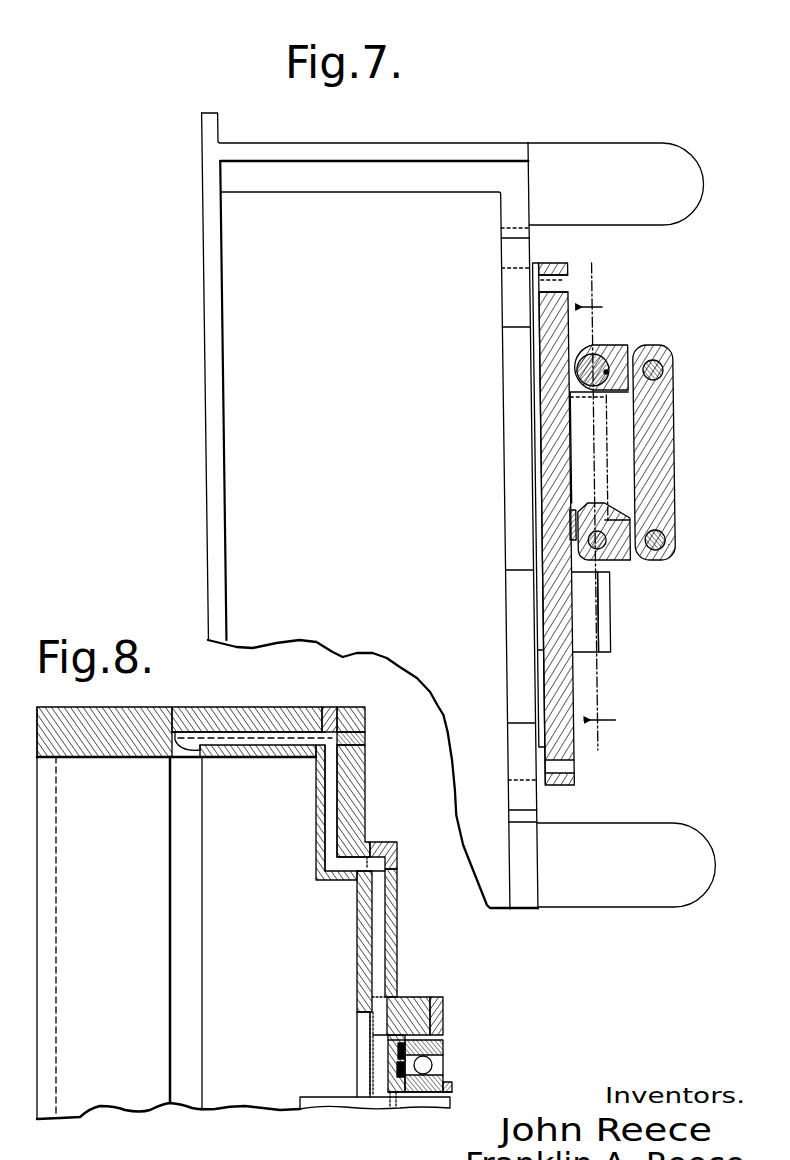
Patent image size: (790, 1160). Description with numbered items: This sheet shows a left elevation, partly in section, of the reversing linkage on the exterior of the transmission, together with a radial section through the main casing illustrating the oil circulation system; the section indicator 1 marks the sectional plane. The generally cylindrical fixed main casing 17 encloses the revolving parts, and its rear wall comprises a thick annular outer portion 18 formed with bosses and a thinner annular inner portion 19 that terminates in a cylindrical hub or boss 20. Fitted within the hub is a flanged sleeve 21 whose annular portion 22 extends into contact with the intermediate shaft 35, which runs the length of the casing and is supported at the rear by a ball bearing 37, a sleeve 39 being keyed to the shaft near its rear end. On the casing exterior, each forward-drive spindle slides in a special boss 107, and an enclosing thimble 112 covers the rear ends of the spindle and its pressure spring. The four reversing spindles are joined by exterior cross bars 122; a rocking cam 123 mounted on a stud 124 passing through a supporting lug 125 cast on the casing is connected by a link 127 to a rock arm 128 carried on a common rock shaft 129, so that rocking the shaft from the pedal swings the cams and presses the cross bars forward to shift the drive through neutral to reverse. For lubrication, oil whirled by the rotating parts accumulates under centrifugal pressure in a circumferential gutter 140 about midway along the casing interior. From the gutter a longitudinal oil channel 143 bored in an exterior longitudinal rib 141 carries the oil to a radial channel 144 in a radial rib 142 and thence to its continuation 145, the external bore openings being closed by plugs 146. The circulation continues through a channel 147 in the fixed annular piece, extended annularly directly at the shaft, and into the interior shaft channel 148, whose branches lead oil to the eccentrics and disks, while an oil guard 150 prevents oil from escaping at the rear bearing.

In FIG. 7, the section line 1 is at (599, 507).
In FIG. 7, the main casing 17 is at (369, 511).
In FIG. 8, the main casing 17 is at (118, 726).
In FIG. 8, the annular outer portion 18 is at (313, 795).
In FIG. 8, the annular inner portion 19 is at (357, 943).
In FIG. 7, the cylindrical hub or boss 20 is at (579, 636).
In FIG. 8, the cylindrical hub or boss 20 is at (412, 1005).
In FIG. 7, the flanged sleeve 21 is at (599, 627).
In FIG. 8, the flanged sleeve 21 is at (447, 1014).
In FIG. 8, the annular portion 22 is at (370, 1046).
In FIG. 8, the shaft 35 is at (445, 1105).
In FIG. 8, the ball bearing 37 is at (442, 1062).
In FIG. 8, the sleeve 39 is at (455, 1088).
In FIG. 7, the boss 107 is at (513, 177).
In FIG. 7, the thimble 112 is at (622, 525).
In FIG. 7, the cross bar 122 is at (549, 742).
In FIG. 7, the rocking cam 123 is at (580, 510).
In FIG. 7, the stud 124 is at (605, 548).
In FIG. 7, the supporting lug 125 is at (619, 565).
In FIG. 7, the link 127 is at (656, 445).
In FIG. 7, the rock arm 128 is at (629, 347).
In FIG. 7, the rock shaft 129 is at (595, 360).
In FIG. 8, the gutter 140 is at (182, 815).
In FIG. 8, the longitudinal rib 141 is at (200, 712).
In FIG. 8, the radial rib 142 is at (352, 810).
In FIG. 8, the longitudinal oil channel 143 is at (253, 737).
In FIG. 8, the radial channel 144 is at (330, 787).
In FIG. 8, the continuation channel 145 is at (373, 918).
In FIG. 8, the plug 146 is at (330, 714).
In FIG. 8, the channel 147 is at (382, 1068).
In FIG. 8, the shaft channel 148 is at (362, 1115).
In FIG. 8, the oil guard 150 is at (393, 1110).